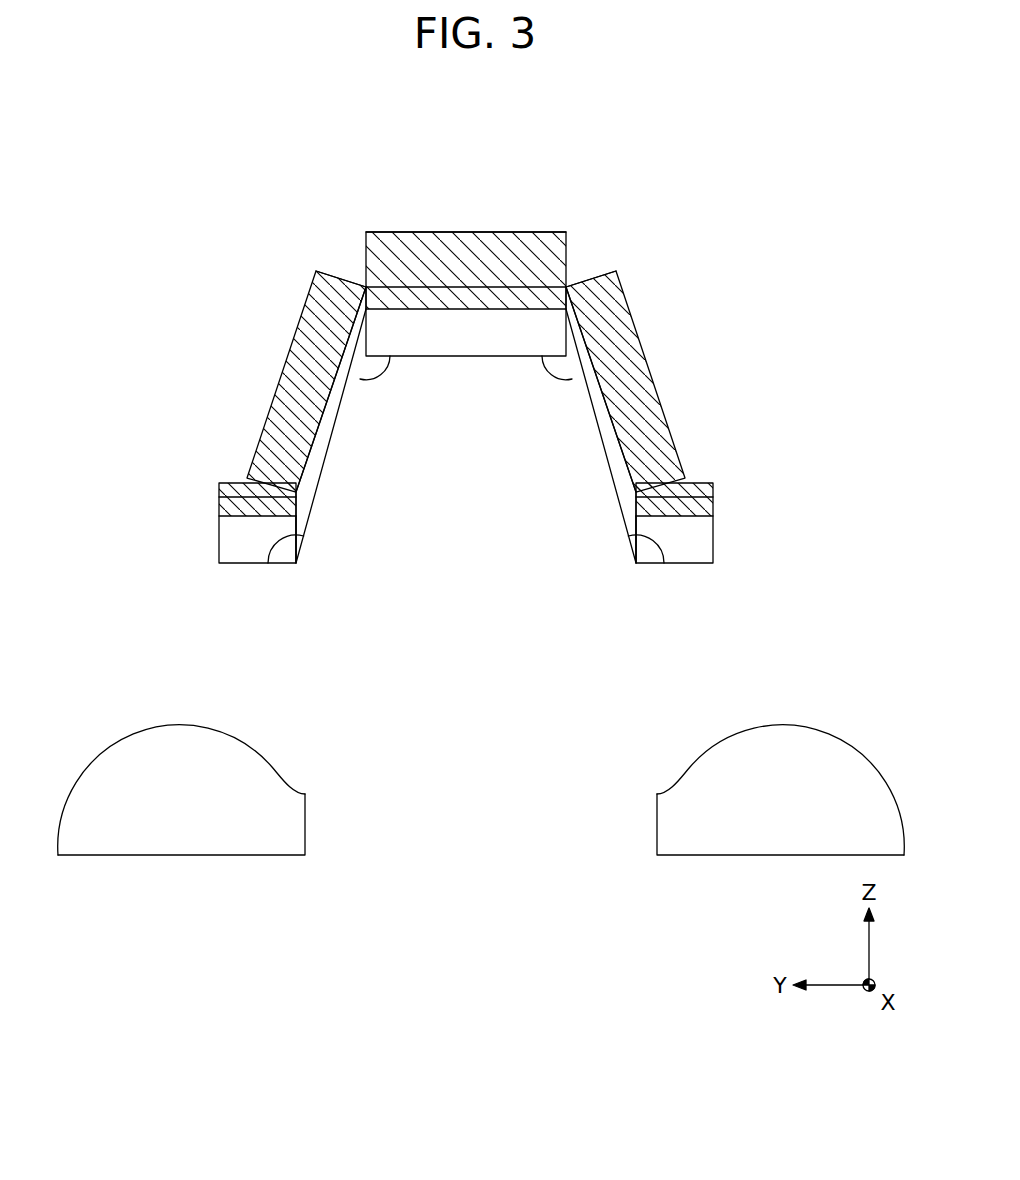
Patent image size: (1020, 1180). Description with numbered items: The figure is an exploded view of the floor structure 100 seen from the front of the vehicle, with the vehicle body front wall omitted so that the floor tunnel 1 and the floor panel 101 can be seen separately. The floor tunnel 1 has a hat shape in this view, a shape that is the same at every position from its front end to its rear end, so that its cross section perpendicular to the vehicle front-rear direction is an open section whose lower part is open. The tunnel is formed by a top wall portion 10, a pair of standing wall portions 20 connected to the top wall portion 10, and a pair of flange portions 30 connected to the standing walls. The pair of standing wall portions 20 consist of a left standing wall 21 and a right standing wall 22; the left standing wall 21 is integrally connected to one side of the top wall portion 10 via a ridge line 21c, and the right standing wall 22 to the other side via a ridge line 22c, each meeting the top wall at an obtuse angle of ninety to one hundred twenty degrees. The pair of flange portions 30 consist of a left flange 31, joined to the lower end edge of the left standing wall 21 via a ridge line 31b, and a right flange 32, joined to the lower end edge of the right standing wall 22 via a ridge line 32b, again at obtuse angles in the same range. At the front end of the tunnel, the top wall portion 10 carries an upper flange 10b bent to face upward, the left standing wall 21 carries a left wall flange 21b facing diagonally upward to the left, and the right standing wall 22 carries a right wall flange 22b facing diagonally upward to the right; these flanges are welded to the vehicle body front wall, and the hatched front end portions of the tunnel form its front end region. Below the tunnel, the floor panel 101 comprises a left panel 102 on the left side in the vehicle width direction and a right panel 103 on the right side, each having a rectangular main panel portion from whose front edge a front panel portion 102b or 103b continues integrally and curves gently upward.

The floor structure 100 is at (691, 212).
The floor tunnel 1 is at (255, 236).
The top wall portion 10 is at (467, 337).
The upper flange 10b is at (476, 232).
The pair of standing wall portions 20 is at (320, 470).
The left standing wall 21 is at (648, 369).
The right standing wall 22 is at (292, 365).
The left wall flange 21b is at (660, 380).
The right wall flange 22b is at (278, 370).
The ridge line 21c is at (566, 330).
The ridge line 22c is at (367, 332).
The pair of flange portions 30 is at (232, 533).
The left flange 31 is at (747, 573).
The right flange 32 is at (195, 573).
The ridge line 31b is at (637, 549).
The ridge line 32b is at (297, 548).
The floor panel 101 is at (72, 556).
The left panel 102 is at (713, 823).
The front panel portion 102b is at (780, 839).
The right panel 103 is at (152, 835).
The front panel portion 103b is at (181, 850).